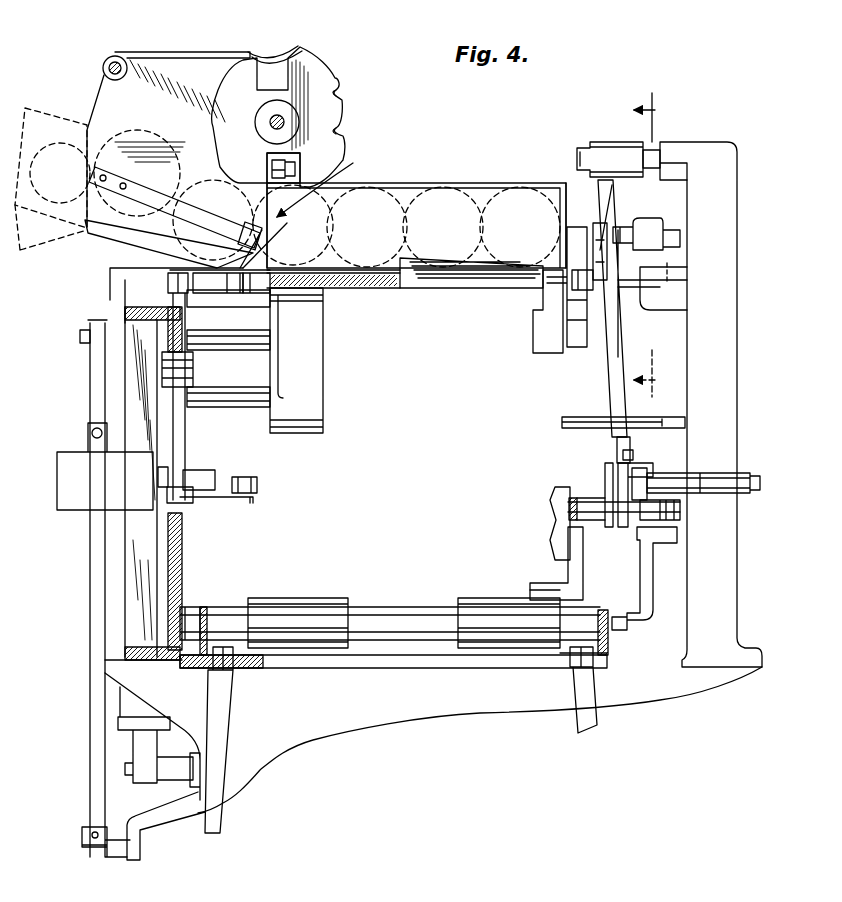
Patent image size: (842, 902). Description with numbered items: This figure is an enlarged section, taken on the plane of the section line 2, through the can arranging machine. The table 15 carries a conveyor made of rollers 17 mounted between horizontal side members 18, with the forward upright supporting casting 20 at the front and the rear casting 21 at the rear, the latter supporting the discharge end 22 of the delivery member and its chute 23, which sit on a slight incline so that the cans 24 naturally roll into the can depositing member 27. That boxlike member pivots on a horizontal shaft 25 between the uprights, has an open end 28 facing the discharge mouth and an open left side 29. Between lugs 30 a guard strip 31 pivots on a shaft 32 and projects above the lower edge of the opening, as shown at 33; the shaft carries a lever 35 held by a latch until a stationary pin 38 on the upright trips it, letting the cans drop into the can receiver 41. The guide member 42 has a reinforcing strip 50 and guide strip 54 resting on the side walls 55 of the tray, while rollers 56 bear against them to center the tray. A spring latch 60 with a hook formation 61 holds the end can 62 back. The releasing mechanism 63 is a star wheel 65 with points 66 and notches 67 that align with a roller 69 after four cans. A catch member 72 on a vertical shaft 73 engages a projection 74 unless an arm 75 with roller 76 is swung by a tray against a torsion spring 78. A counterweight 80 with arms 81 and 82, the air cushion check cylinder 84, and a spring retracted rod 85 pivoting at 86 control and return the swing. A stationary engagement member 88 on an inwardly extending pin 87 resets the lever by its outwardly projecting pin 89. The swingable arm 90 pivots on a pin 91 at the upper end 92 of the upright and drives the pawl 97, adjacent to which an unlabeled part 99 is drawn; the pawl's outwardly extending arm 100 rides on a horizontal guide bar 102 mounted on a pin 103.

The section line 2 is at (653, 241).
The table 15 is at (660, 692).
The rollers 17 is at (302, 612).
The horizontal side members 18 is at (600, 667).
The upright supporting casting 20 is at (718, 575).
The rear casting 21 is at (137, 407).
The discharge end 22 is at (103, 97).
The chute 23 is at (20, 213).
The cans 24 is at (57, 137).
The horizontal shaft 25 is at (637, 287).
The can depositing member 27 is at (458, 182).
The open end 28 is at (324, 188).
The open left side 29 is at (482, 193).
The lugs 30 is at (547, 293).
The guard strip 31 is at (493, 283).
The shaft 32 is at (543, 247).
The guard strip upper portion 33 is at (393, 257).
The lever 35 is at (583, 287).
The stationary pin 38 is at (588, 420).
The can receiver 41 is at (543, 588).
The guide member 42 is at (562, 535).
The reinforcing strip 50 is at (568, 510).
The guide strip 54 is at (627, 527).
The side walls 55 is at (580, 550).
The rollers 56 is at (680, 512).
The spring latch 60 is at (173, 187).
The hook formation 61 is at (253, 213).
The end can 62 is at (187, 163).
The releasing mechanism 63 is at (307, 87).
The star wheel 65 is at (313, 130).
The points 66 is at (333, 90).
The notches 67 is at (280, 57).
The roller 69 is at (337, 140).
The catch member 72 is at (208, 295).
The vertical shaft 73 is at (180, 433).
The projection 74 is at (288, 242).
The arm 75 is at (205, 503).
The roller 76 is at (257, 485).
The torsion spring 78 is at (187, 365).
The counterweight 80 is at (315, 395).
The arm 81 is at (240, 408).
The arm 82 is at (115, 327).
The air cushion check cylinder 84 is at (133, 707).
The spring retracted rod 85 is at (93, 550).
The pivot 86 is at (97, 340).
The inwardly extending pin 87 is at (623, 227).
The stationary engagement member 88 is at (600, 237).
The outwardly projecting pin 89 is at (600, 223).
The swingable arm 90 is at (613, 367).
The pin 91 is at (657, 150).
The upper end 92 is at (677, 157).
The pawl 97 is at (603, 473).
The washer 99 is at (603, 497).
The outwardly extending arm 100 is at (628, 467).
The horizontal guide bar 102 is at (647, 473).
The pin 103 is at (670, 483).